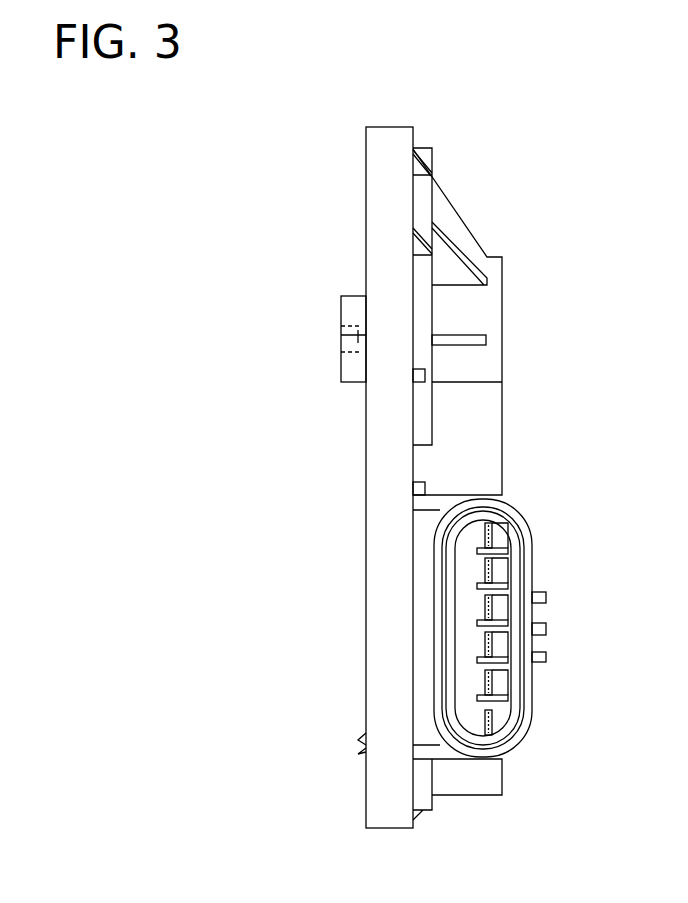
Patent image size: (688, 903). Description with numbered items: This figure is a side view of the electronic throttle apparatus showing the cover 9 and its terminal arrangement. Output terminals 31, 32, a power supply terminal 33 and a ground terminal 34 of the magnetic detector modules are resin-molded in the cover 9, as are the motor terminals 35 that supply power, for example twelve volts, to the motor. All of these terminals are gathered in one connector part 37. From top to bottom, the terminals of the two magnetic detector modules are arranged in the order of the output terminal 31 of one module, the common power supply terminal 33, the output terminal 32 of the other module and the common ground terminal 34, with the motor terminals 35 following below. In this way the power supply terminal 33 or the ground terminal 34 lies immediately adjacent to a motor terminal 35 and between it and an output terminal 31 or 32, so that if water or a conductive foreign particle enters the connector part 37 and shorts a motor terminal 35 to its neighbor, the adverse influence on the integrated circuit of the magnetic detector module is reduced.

The cover 9 is at (389, 152).
The output terminal 31 is at (496, 530).
The output terminal 32 is at (496, 607).
The power supply terminal 33 is at (496, 563).
The ground terminal 34 is at (495, 643).
The motor terminals 35 is at (495, 683).
The connector part 37 is at (533, 573).